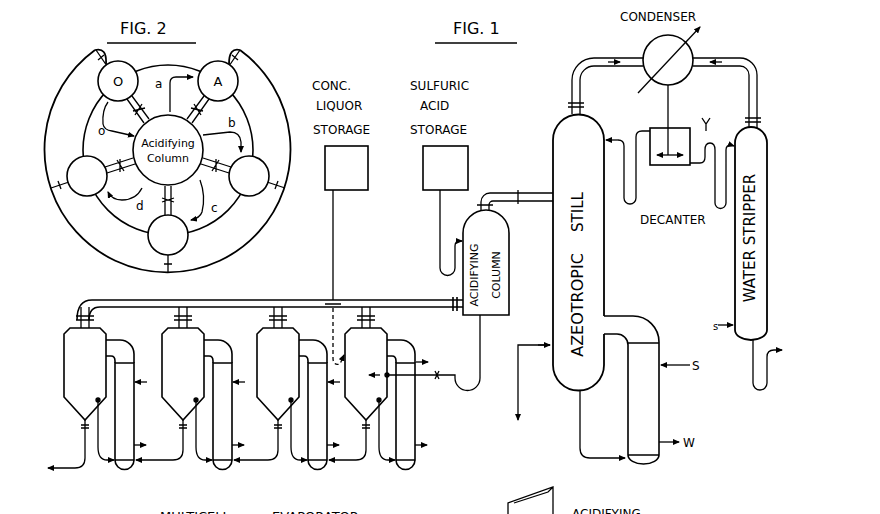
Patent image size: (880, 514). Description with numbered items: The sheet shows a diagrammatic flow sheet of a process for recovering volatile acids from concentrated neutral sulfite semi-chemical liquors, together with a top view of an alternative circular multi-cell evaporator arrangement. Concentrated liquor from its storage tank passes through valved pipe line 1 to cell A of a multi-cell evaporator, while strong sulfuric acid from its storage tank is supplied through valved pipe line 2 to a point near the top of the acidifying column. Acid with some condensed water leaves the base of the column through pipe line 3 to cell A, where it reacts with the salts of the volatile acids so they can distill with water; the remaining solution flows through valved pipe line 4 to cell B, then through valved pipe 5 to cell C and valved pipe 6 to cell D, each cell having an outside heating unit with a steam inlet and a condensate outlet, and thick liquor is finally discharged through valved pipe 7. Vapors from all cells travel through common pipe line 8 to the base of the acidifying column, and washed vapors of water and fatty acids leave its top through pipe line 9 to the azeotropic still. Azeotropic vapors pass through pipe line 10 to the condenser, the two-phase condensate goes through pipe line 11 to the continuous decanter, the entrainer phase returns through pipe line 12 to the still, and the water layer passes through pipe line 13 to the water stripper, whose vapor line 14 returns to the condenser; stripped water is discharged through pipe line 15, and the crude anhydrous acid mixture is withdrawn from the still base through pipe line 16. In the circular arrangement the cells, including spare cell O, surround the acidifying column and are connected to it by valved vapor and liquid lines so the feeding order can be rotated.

In FIG. 1, the valved pipe line 1 is at (334, 277).
In FIG. 2, the valved pipe line 1 is at (78, 62).
In FIG. 1, the valved pipe line 2 is at (445, 233).
In FIG. 2, the valved pipe line 2 is at (237, 216).
In FIG. 1, the pipe line 3 is at (424, 353).
In FIG. 1, the valved pipe line 4 is at (383, 400).
In FIG. 2, the valved pipe line 4 is at (257, 152).
In FIG. 1, the valved pipe 5 is at (292, 400).
In FIG. 2, the valved pipe 5 is at (187, 244).
In FIG. 1, the valved pipe 6 is at (195, 400).
In FIG. 2, the valved pipe 6 is at (85, 196).
In FIG. 1, the valved pipe 7 is at (102, 399).
In FIG. 1, the common pipe line 8 is at (270, 302).
In FIG. 1, the pipe line 9 is at (515, 192).
In FIG. 1, the pipe line 10 is at (605, 77).
In FIG. 1, the pipe line 11 is at (678, 120).
In FIG. 1, the pipe line 12 is at (628, 164).
In FIG. 1, the pipe line 13 is at (712, 163).
In FIG. 1, the pipe line 14 is at (727, 83).
In FIG. 1, the pipe line 15 is at (781, 365).
In FIG. 1, the pipe line 16 is at (529, 398).